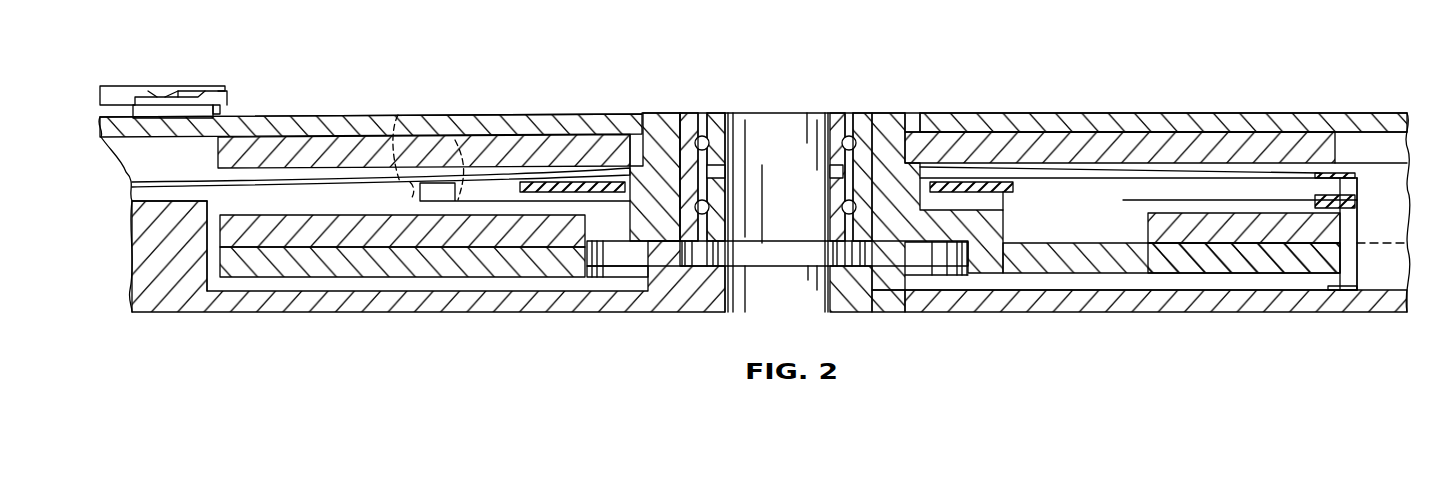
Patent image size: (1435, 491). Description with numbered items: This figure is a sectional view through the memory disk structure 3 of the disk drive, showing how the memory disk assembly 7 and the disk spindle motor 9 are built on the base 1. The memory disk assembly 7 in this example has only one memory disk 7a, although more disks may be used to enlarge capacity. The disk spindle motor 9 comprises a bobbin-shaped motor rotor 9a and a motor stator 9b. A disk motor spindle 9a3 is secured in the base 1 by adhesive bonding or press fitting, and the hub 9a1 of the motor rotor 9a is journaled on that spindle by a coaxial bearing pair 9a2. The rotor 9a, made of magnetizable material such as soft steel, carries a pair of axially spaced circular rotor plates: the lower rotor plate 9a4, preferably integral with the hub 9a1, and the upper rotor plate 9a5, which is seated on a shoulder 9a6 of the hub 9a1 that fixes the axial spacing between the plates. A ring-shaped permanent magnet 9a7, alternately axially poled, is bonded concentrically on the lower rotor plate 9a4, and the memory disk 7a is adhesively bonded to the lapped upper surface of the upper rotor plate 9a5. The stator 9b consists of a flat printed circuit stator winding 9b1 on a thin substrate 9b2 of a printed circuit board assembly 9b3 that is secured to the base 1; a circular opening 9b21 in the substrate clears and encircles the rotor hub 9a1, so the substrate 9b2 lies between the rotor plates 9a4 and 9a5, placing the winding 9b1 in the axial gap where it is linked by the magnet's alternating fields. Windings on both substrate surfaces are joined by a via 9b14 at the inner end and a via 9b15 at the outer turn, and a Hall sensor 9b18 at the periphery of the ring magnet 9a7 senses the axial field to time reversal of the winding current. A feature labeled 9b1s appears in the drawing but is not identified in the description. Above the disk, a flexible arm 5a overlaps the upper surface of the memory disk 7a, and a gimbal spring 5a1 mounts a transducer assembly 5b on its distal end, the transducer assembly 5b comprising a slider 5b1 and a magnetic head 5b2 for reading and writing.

The base 1 is at (395, 318).
The memory disk structure 3 is at (970, 83).
The flexible arm 5a is at (120, 86).
The gimbal spring 5a1 is at (168, 92).
The transducer assembly 5b is at (205, 99).
The slider 5b1 is at (222, 97).
The magnetic head 5b2 is at (232, 106).
The memory disk assembly 7 is at (1139, 112).
The memory disk 7a is at (1068, 128).
The disk spindle motor 9 is at (1135, 237).
The motor rotor 9a is at (560, 243).
The hub 9a1 is at (665, 124).
The coaxial bearing pair 9a2 is at (692, 125).
The disk motor spindle 9a3 is at (795, 122).
The lower rotor plate 9a4 is at (488, 252).
The upper rotor plate 9a5 is at (515, 132).
The shoulder 9a6 is at (640, 147).
The ring-shaped permanent magnet 9a7 is at (228, 232).
The motor stator 9b is at (1108, 192).
The printed circuit stator winding 9b1 is at (230, 167).
The thin substrate 9b2 is at (150, 184).
The printed circuit board assembly 9b3 is at (135, 192).
The via 9b14 is at (454, 118).
The via 9b15 is at (410, 120).
The Hall sensor 9b18 is at (1393, 278).
The yoke step 9b1s is at (1350, 292).
The circular opening 9b21 is at (932, 194).